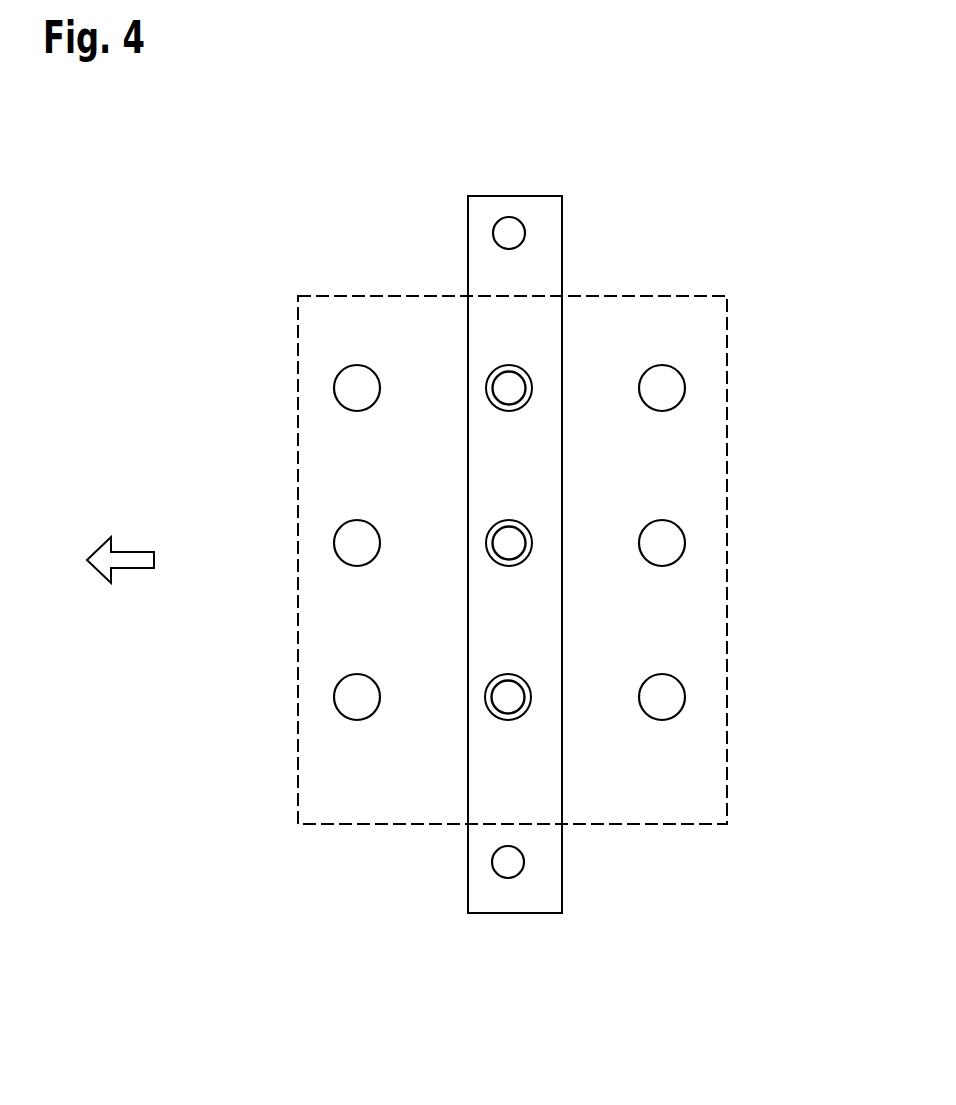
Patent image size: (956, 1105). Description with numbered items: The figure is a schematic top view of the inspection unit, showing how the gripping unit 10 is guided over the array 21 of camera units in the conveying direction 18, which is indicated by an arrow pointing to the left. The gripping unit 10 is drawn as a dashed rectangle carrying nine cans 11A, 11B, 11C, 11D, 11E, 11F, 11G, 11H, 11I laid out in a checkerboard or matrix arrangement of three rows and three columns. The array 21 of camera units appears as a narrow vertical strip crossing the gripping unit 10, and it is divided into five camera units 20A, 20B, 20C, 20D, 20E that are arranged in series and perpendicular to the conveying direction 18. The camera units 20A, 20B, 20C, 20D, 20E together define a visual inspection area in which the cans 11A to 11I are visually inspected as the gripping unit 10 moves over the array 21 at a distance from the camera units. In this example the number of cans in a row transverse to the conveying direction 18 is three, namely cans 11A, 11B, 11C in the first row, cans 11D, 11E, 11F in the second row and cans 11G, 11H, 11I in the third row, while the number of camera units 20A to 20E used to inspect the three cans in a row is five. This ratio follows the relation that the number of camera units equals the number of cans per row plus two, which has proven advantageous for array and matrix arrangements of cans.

The gripping unit 10 is at (332, 296).
The can 11A is at (336, 394).
The can 11B is at (487, 385).
The can 11C is at (684, 398).
The can 11D is at (336, 548).
The can 11E is at (512, 567).
The can 11F is at (684, 553).
The can 11G is at (336, 703).
The can 11H is at (508, 721).
The can 11I is at (684, 707).
The conveying direction 18 is at (130, 551).
The camera unit 20A is at (525, 233).
The camera unit 20B is at (528, 377).
The camera unit 20C is at (517, 523).
The camera unit 20D is at (528, 705).
The camera unit 20E is at (521, 871).
The array of camera units 21 is at (513, 913).